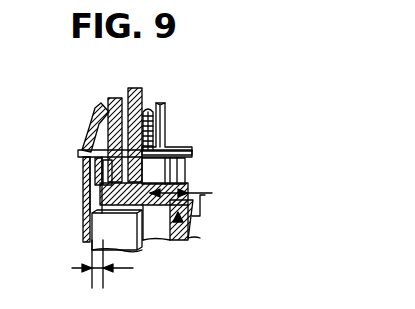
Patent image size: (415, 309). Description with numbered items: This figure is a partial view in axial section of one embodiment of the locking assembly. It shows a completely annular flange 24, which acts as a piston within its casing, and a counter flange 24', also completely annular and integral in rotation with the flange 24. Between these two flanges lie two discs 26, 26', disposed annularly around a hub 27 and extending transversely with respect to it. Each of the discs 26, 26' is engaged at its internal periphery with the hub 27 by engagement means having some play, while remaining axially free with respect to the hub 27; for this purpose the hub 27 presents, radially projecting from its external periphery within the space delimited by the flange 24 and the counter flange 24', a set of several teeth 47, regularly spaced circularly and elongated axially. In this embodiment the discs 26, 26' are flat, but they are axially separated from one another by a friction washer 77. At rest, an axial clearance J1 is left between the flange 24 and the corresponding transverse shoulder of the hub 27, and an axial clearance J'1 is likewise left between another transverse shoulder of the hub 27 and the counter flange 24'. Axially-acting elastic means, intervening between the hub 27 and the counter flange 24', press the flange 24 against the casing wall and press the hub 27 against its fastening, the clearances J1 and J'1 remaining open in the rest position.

The flange 24 is at (180, 160).
The counter flange 24' is at (182, 114).
The disc 26 is at (180, 152).
The disc 26' is at (180, 150).
The friction washer 77 is at (85, 151).
The teeth 47 is at (154, 173).
The hub 27 is at (174, 240).
The axial clearance J1 is at (88, 264).
The axial clearance J'1 is at (191, 210).